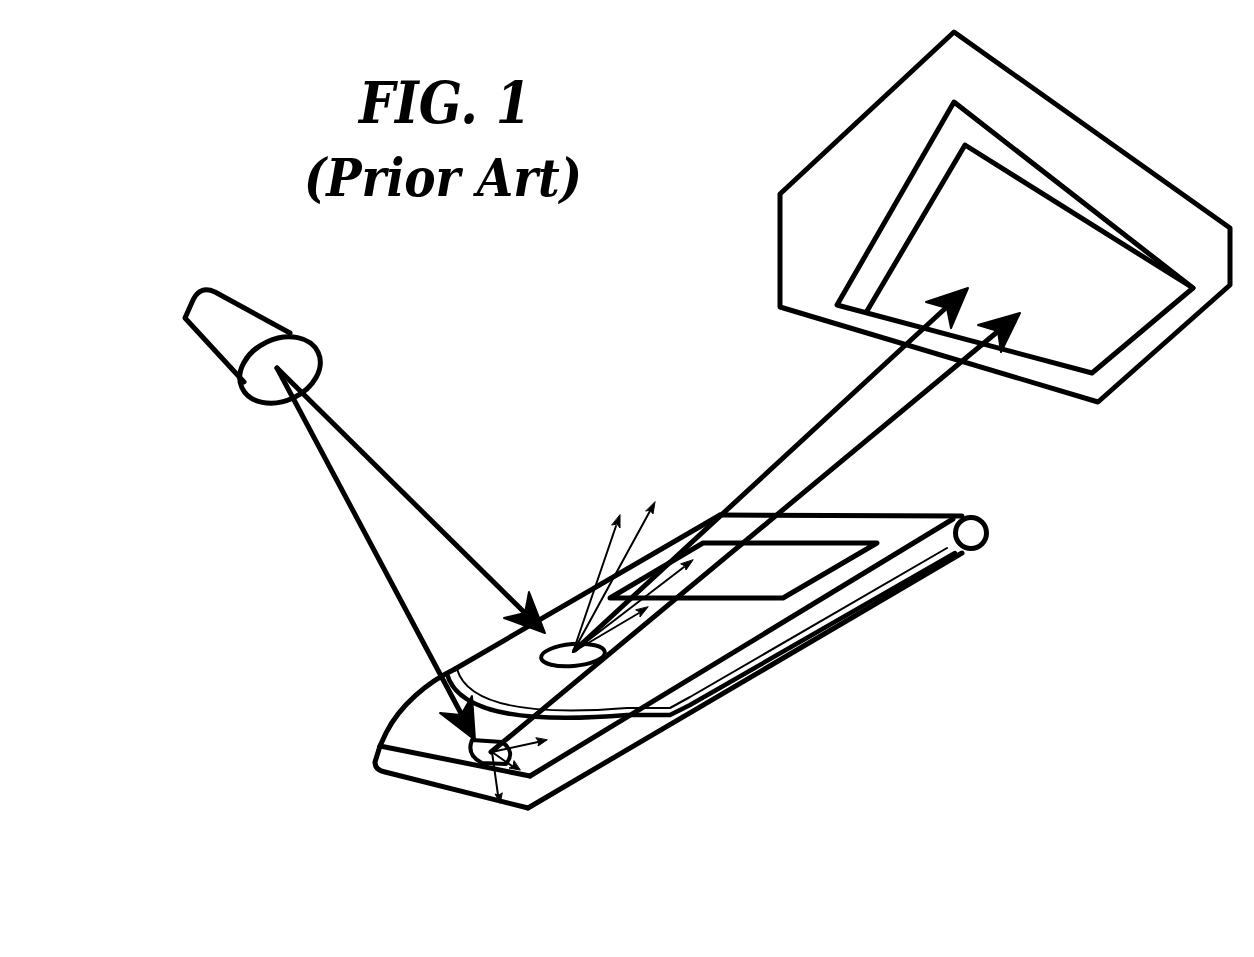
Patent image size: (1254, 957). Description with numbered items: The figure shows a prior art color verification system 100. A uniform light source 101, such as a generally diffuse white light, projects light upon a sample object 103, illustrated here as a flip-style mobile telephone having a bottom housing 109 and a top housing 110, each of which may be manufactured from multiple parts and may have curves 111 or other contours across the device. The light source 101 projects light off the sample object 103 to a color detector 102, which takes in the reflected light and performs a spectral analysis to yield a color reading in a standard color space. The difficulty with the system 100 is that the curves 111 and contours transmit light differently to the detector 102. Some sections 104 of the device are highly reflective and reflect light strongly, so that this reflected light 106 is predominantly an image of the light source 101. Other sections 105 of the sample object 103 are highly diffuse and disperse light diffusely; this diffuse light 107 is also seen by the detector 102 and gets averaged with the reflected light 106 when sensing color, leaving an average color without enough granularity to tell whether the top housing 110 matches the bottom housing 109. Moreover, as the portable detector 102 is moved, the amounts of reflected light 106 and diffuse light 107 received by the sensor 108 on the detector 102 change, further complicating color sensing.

The color verification system 100 is at (968, 682).
The uniform light source 101 is at (293, 333).
The color detector 102 is at (807, 322).
The sample object 103 is at (870, 613).
The highly reflective sections 104 is at (558, 645).
The highly diffuse sections 105 is at (467, 757).
The reflected light 106 is at (607, 543).
The diffuse light 107 is at (533, 752).
The sensor 108 is at (1030, 296).
The bottom housing 109 is at (403, 773).
The top housing 110 is at (905, 527).
The curves 111 is at (392, 718).